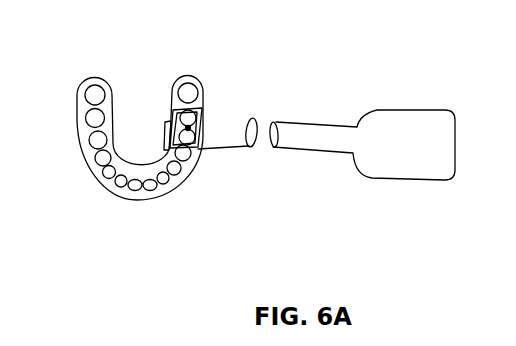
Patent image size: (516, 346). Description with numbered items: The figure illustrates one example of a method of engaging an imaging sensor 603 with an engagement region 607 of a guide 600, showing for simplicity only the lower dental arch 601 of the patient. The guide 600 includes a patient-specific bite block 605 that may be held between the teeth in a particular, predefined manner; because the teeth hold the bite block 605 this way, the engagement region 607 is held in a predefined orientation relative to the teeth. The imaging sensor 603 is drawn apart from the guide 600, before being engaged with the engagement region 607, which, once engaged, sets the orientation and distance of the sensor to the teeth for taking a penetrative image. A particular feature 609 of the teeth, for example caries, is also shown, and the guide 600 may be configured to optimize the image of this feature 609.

The guide 600 is at (218, 136).
The dental arch 601 is at (92, 92).
The imaging sensor 603 is at (378, 120).
The patient-specific bite block 605 is at (168, 112).
The engagement region 607 is at (243, 160).
The feature of the teeth 609 is at (202, 115).